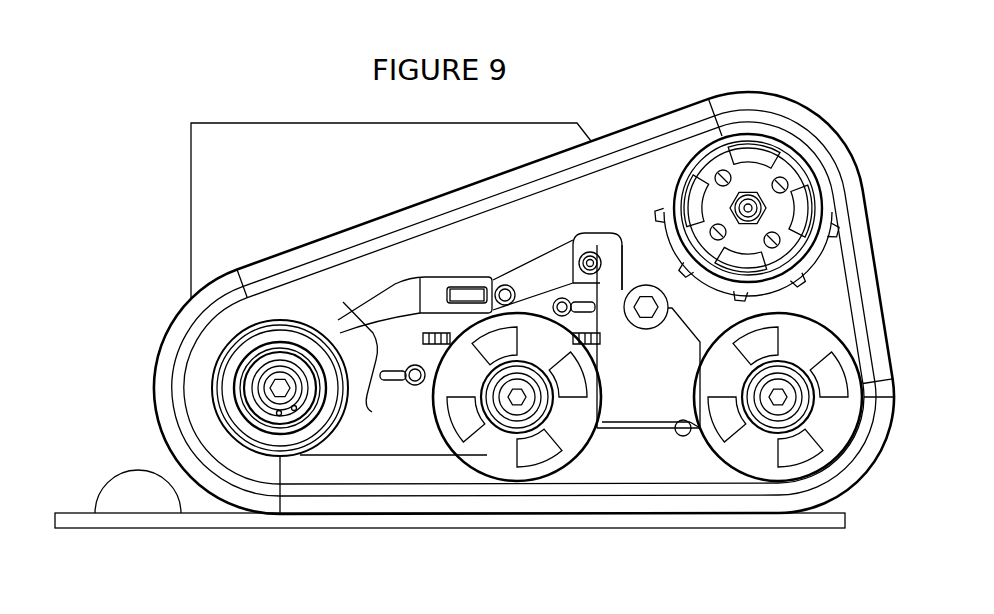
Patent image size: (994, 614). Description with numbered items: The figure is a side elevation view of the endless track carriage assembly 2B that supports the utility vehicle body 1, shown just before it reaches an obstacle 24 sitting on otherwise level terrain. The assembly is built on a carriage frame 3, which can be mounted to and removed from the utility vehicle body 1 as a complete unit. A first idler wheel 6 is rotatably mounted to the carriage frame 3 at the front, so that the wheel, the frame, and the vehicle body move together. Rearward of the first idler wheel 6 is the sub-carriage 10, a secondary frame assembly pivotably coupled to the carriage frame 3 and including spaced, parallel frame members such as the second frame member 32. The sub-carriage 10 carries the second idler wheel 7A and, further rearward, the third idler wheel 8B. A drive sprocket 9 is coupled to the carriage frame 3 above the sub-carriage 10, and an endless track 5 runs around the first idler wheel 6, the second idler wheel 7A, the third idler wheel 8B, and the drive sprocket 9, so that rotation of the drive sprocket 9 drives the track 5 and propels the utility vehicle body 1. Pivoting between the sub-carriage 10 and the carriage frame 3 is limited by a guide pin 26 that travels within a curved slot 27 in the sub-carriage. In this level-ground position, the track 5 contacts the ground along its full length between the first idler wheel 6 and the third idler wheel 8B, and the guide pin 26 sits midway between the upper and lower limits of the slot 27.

The utility vehicle body 1 is at (188, 162).
The endless track carriage assembly 2B is at (503, 305).
The carriage frame 3 is at (353, 298).
The endless track 5 is at (152, 369).
The first idler wheel 6 is at (255, 451).
The second idler wheel 7A is at (475, 479).
The third idler wheel 8B is at (741, 479).
The drive sprocket 9 is at (797, 212).
The sub-carriage 10 is at (597, 227).
The obstacle 24 is at (103, 485).
The guide pin 26 is at (578, 254).
The slot 27 is at (574, 271).
The second frame member 32 is at (656, 384).